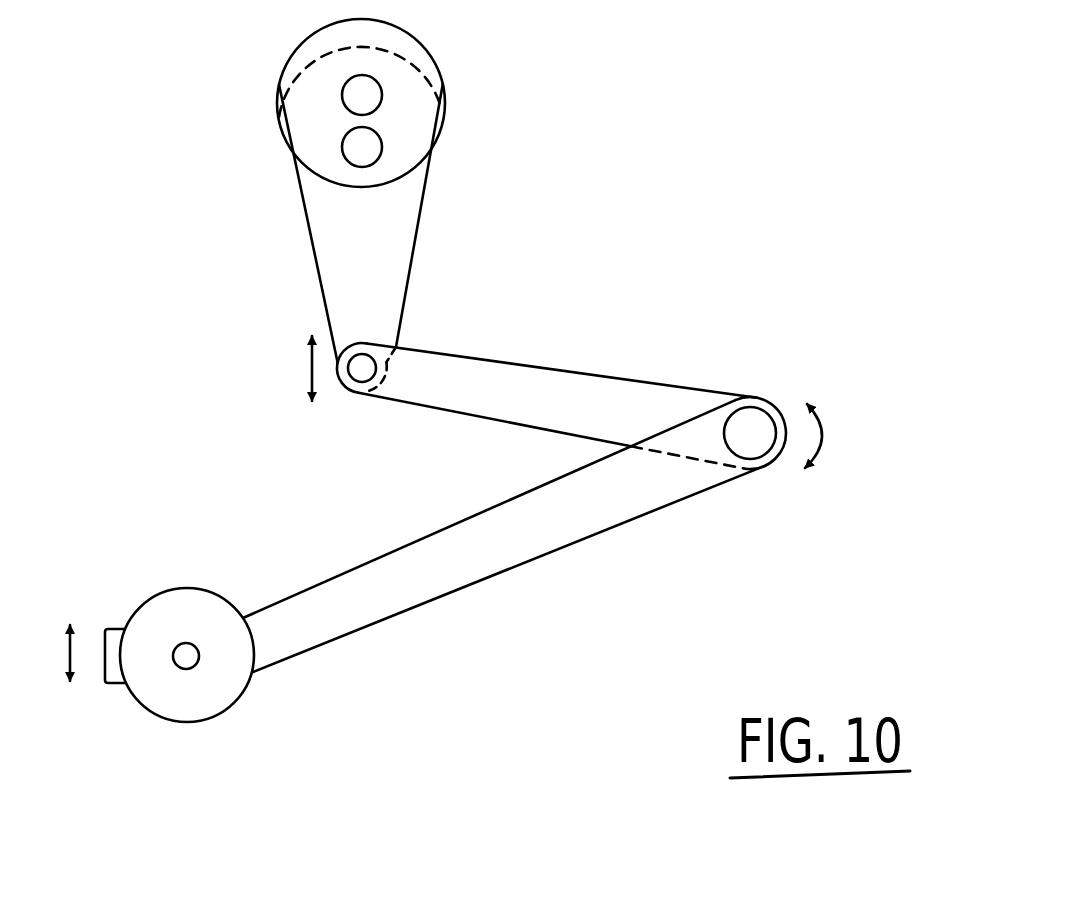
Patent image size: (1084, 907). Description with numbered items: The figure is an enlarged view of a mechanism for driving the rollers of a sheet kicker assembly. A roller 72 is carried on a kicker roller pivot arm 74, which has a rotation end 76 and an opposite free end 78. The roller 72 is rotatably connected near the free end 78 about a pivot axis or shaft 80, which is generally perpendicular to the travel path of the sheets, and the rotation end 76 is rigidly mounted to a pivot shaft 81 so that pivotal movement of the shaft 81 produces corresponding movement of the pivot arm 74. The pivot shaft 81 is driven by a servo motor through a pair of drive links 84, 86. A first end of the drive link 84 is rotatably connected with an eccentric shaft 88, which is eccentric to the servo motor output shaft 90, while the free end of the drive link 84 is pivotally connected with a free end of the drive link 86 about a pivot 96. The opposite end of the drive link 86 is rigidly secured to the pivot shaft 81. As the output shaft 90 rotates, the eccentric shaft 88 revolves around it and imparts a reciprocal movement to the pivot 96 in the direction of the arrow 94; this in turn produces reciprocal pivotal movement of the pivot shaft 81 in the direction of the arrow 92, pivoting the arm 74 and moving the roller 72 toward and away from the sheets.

The roller 72 is at (215, 688).
The kicker roller pivot arm 74 is at (435, 570).
The rotation end 76 is at (768, 395).
The free end 78 is at (118, 698).
The pivot axis or shaft 80 is at (188, 655).
The pivot shaft 81 is at (747, 438).
The drive link 84 is at (388, 257).
The drive link 86 is at (573, 395).
The eccentric shaft 88 is at (368, 147).
The servo motor output shaft 90 is at (368, 95).
The arrow 92 is at (821, 432).
The arrow 94 is at (310, 360).
The pivot 96 is at (365, 368).